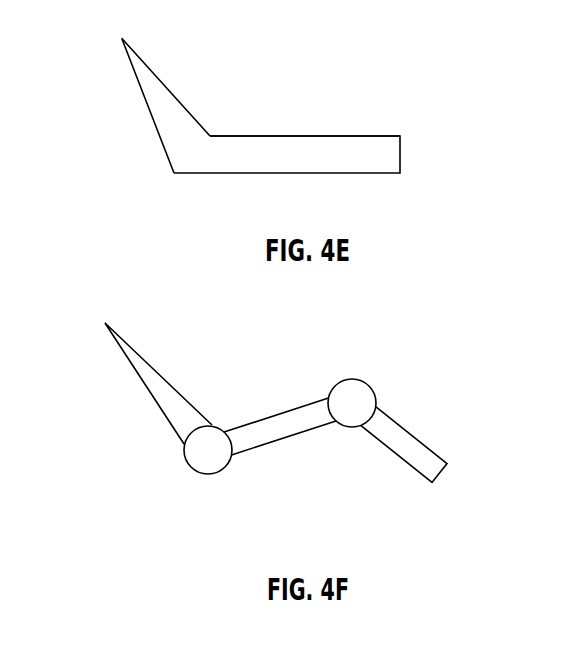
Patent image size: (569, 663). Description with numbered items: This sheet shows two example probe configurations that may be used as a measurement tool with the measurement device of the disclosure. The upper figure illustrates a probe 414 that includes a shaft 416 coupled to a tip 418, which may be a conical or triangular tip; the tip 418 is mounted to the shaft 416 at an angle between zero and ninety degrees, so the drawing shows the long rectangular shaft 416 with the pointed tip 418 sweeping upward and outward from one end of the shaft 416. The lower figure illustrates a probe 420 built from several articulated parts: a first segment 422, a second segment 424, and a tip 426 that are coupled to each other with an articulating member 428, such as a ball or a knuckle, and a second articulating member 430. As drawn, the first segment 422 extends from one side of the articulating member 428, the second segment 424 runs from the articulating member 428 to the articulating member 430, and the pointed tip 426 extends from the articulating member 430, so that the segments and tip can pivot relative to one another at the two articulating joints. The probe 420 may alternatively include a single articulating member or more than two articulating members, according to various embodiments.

In FIG. 4E, the probe 414 is at (400, 152).
In FIG. 4E, the shaft 416 is at (281, 136).
In FIG. 4E, the tip 418 is at (165, 82).
In FIG. 4F, the probe 420 is at (470, 457).
In FIG. 4F, the first segment 422 is at (410, 425).
In FIG. 4F, the second segment 424 is at (265, 411).
In FIG. 4F, the tip 426 is at (135, 347).
In FIG. 4F, the articulating member 428 is at (367, 373).
In FIG. 4F, the articulating member 430 is at (210, 467).